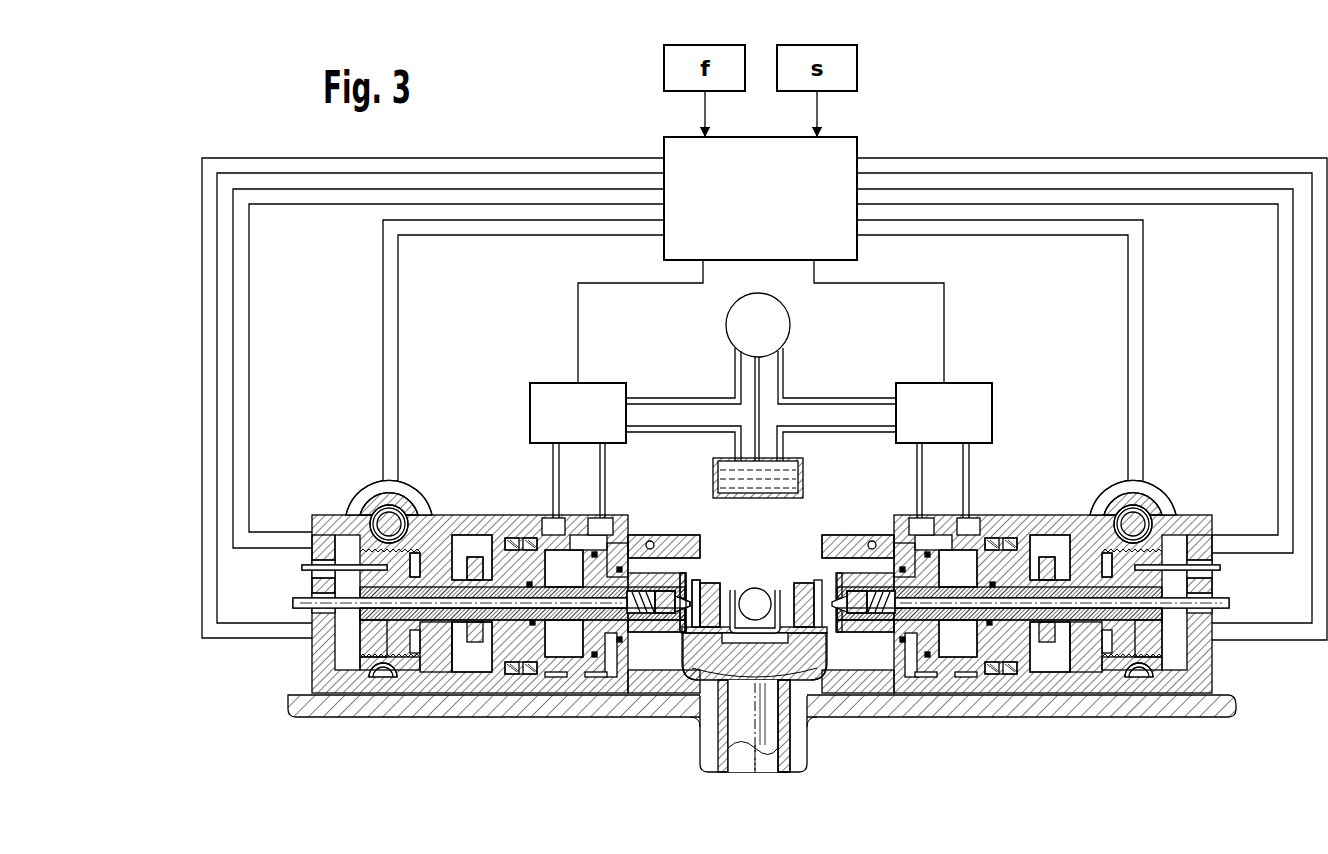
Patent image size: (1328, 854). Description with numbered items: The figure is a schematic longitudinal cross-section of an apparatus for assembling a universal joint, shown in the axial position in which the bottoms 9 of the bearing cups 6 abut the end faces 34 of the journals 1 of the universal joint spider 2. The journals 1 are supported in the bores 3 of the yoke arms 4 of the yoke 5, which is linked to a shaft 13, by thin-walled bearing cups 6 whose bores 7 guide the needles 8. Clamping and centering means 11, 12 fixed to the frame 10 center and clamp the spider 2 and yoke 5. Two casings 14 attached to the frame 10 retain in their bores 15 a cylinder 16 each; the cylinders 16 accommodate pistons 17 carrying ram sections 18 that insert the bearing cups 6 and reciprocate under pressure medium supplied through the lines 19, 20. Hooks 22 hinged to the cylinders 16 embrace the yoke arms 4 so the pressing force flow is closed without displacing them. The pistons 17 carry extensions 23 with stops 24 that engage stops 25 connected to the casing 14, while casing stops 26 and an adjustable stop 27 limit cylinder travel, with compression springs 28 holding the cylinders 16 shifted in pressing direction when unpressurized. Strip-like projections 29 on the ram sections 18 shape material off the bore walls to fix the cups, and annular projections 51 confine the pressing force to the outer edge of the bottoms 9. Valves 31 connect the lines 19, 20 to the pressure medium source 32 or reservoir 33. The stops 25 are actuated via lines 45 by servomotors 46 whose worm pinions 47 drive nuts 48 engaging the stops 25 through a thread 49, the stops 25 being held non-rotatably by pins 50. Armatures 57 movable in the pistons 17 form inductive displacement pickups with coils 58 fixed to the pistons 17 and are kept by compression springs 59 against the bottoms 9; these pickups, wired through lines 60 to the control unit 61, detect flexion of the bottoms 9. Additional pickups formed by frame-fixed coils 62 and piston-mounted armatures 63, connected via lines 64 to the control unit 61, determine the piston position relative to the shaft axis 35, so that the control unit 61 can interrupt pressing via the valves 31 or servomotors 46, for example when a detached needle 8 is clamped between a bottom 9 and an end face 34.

The journal 1 is at (752, 596).
The universal joint spider 2 is at (773, 590).
The bore 3 is at (800, 560).
The yoke arm 4 is at (686, 588).
The yoke 5 is at (830, 660).
The bearing cup 6 is at (685, 640).
The bore 7 is at (696, 640).
The needle 8 is at (706, 640).
The bottom 9 is at (672, 640).
The frame 10 is at (318, 707).
The clamping and centering means 11 is at (714, 745).
The clamping and centering means 12 is at (808, 700).
The shaft 13 is at (745, 735).
The casing 14 is at (490, 688).
The bore 15 is at (463, 670).
The cylinder 16 is at (575, 550).
The piston 17 is at (592, 640).
The ram section 18 is at (616, 560).
The line 19 is at (553, 458).
The line 20 is at (605, 458).
The hook 22 is at (656, 535).
The extension 23 is at (433, 655).
The stop 24 is at (381, 670).
The stop 25 is at (396, 677).
The stop 26 is at (497, 540).
The adjustable stop 27 is at (475, 557).
The compression spring 28 is at (522, 538).
The strip-like projection 29 is at (668, 588).
The valve 31 is at (552, 393).
The pressure medium source 32 is at (758, 307).
The pressure medium reservoir 33 is at (713, 462).
The end face 34 is at (712, 583).
The shaft axis 35 is at (757, 783).
The line 45 is at (383, 314).
The servomotor 46 is at (414, 492).
The worm pinion 47 is at (379, 508).
The nut 48 is at (368, 548).
The thread 49 is at (330, 570).
The pin 50 is at (435, 565).
The annular projection 51 is at (655, 640).
The armature 57 is at (293, 604).
The coil 58 is at (373, 630).
The compression spring 59 is at (645, 650).
The line 60 is at (225, 625).
The control unit 61 is at (760, 152).
The coil 62 is at (312, 586).
The armature 63 is at (302, 567).
The line 64 is at (269, 547).